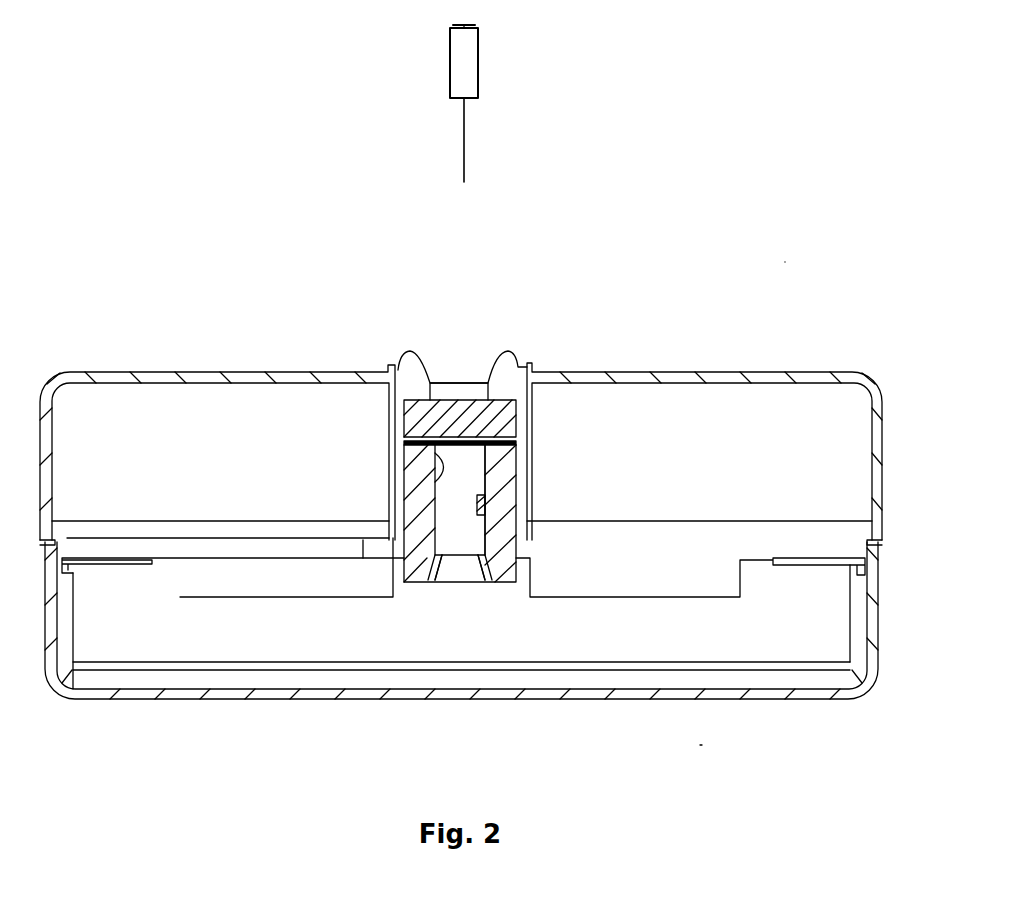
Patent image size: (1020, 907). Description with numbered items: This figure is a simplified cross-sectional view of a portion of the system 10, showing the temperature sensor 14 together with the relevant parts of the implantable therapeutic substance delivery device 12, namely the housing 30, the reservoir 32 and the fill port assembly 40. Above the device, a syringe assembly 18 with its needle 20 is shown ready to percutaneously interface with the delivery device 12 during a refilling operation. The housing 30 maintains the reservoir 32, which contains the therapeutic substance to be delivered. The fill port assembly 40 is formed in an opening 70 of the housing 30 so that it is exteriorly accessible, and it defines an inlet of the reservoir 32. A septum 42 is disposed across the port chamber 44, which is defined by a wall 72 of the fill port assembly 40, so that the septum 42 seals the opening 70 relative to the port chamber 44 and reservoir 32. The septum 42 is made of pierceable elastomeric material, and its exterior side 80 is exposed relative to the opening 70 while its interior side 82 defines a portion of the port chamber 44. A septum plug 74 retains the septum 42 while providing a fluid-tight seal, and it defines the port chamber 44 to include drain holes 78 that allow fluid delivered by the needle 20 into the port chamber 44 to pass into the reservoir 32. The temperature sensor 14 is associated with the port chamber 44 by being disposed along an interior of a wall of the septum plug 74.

The system 10 is at (770, 262).
The implantable therapeutic substance delivery device 12 is at (700, 756).
The temperature sensor 14 is at (490, 506).
The syringe assembly 18 is at (486, 60).
The needle 20 is at (466, 116).
The housing 30 is at (300, 715).
The reservoir 32 is at (622, 650).
The fill port assembly 40 is at (382, 480).
The septum 42 is at (462, 400).
The port chamber 44 is at (432, 453).
The opening 70 is at (388, 364).
The wall 72 is at (414, 500).
The septum plug 74 is at (508, 474).
The drain holes 78 is at (467, 568).
The exterior side 80 is at (445, 400).
The interior side 82 is at (458, 441).